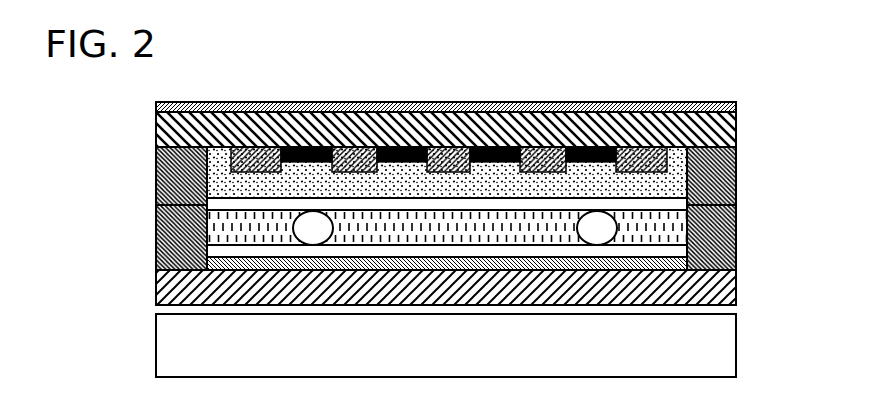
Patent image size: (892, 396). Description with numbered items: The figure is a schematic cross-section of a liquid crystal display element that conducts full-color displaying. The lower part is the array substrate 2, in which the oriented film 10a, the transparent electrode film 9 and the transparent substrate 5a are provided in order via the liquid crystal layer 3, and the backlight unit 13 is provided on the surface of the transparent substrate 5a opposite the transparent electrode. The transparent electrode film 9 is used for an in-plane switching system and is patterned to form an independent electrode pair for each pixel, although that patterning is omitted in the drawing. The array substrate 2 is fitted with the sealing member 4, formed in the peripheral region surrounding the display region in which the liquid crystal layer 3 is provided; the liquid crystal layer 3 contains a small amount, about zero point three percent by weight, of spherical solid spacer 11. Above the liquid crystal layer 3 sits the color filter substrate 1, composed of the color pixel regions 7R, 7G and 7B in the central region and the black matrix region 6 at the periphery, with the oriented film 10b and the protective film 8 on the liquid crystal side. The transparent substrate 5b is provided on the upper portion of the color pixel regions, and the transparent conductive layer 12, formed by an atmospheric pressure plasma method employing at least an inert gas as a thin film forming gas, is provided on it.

The color filter substrate 1 is at (93, 105).
The array substrate 2 is at (93, 250).
The liquid crystal layer 3 is at (93, 215).
The sealing member 4 is at (736, 166).
The transparent substrate 5a is at (722, 290).
The transparent substrate 5b is at (730, 130).
The black matrix region 6 is at (305, 147).
The color pixel region 7R is at (353, 145).
The color pixel region 7G is at (450, 143).
The color pixel region 7B is at (547, 143).
The protective film 8 is at (232, 183).
The transparent electrode film 9 is at (208, 264).
The oriented film 10a is at (688, 250).
The oriented film 10b is at (688, 203).
The spherical solid spacer 11 is at (300, 220).
The transparent conductive layer 12 is at (737, 107).
The backlight unit 13 is at (230, 233).